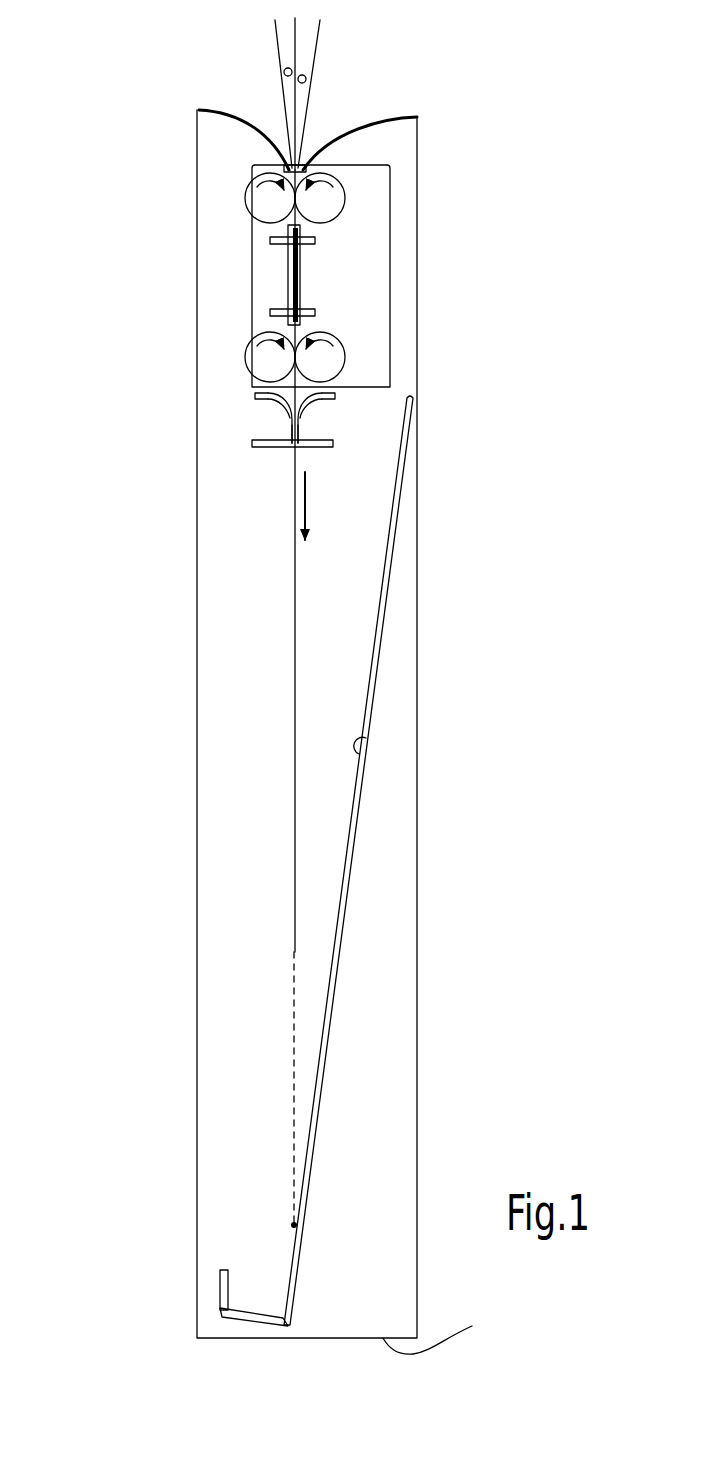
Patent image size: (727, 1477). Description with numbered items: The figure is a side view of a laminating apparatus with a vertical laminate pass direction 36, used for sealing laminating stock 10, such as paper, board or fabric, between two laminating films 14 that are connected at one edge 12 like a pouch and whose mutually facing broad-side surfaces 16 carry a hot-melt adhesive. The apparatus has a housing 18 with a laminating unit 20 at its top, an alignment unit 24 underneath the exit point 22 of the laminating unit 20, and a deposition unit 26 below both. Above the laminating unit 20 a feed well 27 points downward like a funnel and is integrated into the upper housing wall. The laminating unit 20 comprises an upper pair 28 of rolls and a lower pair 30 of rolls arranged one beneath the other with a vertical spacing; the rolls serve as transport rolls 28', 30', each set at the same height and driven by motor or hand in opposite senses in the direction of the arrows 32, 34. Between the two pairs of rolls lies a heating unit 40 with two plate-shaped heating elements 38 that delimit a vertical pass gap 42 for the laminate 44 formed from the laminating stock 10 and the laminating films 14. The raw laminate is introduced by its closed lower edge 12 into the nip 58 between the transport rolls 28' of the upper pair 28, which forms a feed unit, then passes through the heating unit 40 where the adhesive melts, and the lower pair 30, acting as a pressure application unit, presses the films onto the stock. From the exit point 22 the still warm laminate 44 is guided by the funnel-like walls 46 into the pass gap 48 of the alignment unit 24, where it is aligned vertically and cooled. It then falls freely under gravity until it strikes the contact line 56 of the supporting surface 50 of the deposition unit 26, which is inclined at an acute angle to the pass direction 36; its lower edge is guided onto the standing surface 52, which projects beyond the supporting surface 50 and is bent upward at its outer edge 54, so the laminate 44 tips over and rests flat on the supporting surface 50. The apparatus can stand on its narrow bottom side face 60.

The laminating stock 10 is at (297, 58).
The edge 12 is at (292, 950).
The laminating films 14 is at (280, 44).
The broad-side surfaces 16 is at (284, 70).
The housing 18 is at (420, 262).
The laminating unit 20 is at (392, 172).
The exit point 22 is at (254, 394).
The alignment unit 24 is at (280, 407).
The deposition unit 26 is at (386, 612).
The feed well 27 is at (321, 140).
The upper pair of rolls 28 is at (191, 218).
The transport rolls 28' is at (227, 245).
The lower pair of rolls 30 is at (181, 365).
The transport rolls 30' is at (430, 352).
The arrow 32 is at (258, 180).
The arrow 34 is at (262, 334).
The pass direction 36 is at (307, 497).
The heating elements 38 is at (287, 285).
The heating unit 40 is at (305, 293).
The pass gap 42 is at (302, 250).
The laminate 44 is at (291, 634).
The funnel-like walls 46 is at (267, 397).
The pass gap 48 is at (293, 447).
The supporting surface 50 is at (366, 738).
The standing surface 52 is at (247, 1306).
The outer edge 54 is at (221, 1285).
The contact line 56 is at (297, 1224).
The nip 58 is at (288, 164).
The bottom side face 60 is at (442, 1331).